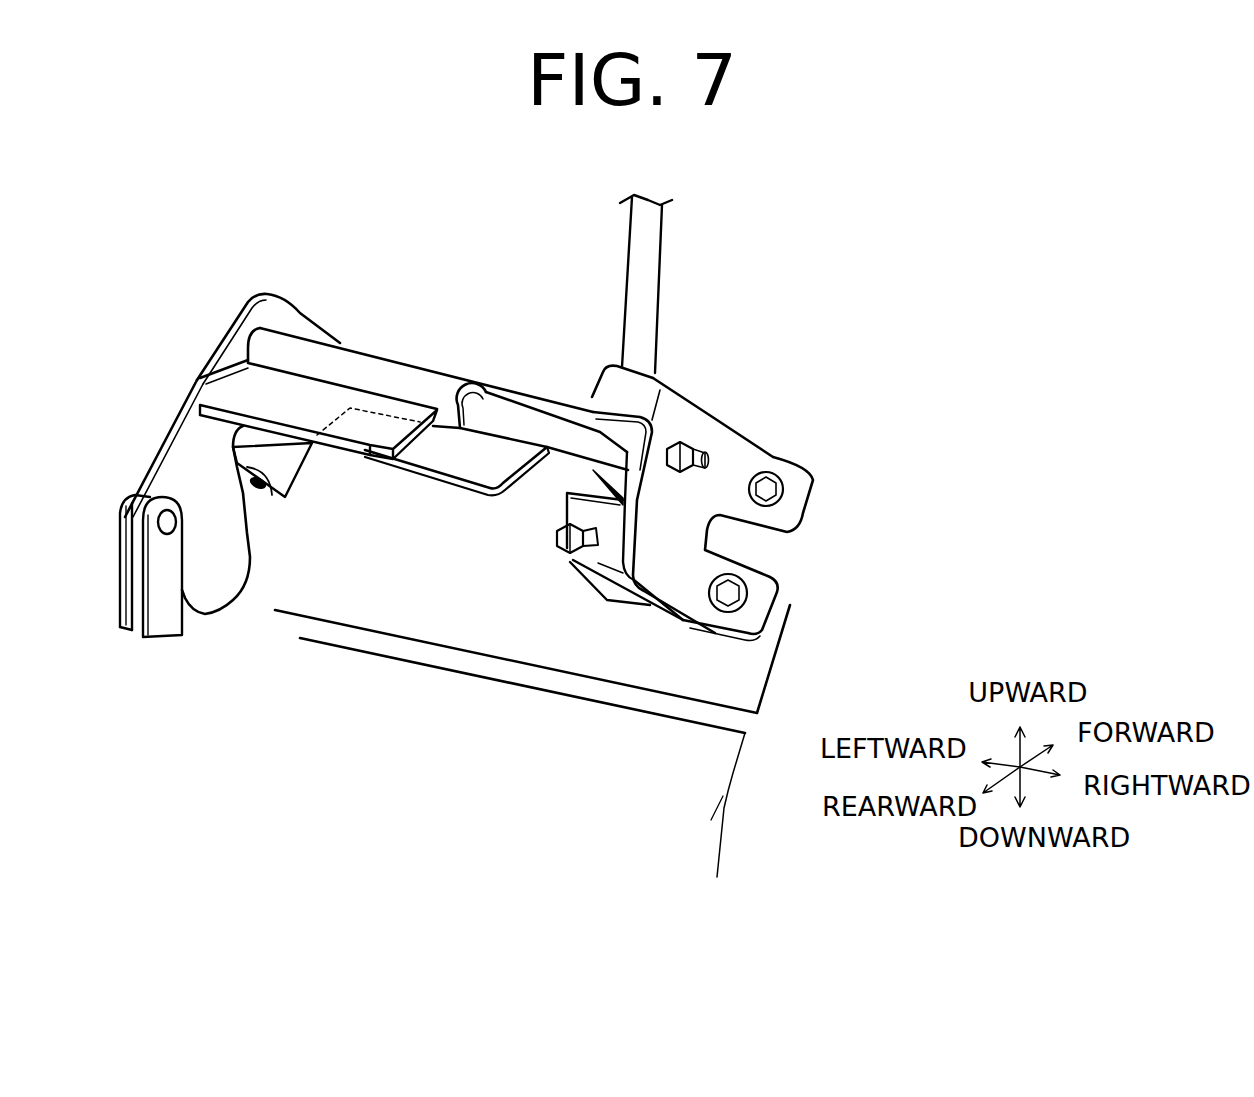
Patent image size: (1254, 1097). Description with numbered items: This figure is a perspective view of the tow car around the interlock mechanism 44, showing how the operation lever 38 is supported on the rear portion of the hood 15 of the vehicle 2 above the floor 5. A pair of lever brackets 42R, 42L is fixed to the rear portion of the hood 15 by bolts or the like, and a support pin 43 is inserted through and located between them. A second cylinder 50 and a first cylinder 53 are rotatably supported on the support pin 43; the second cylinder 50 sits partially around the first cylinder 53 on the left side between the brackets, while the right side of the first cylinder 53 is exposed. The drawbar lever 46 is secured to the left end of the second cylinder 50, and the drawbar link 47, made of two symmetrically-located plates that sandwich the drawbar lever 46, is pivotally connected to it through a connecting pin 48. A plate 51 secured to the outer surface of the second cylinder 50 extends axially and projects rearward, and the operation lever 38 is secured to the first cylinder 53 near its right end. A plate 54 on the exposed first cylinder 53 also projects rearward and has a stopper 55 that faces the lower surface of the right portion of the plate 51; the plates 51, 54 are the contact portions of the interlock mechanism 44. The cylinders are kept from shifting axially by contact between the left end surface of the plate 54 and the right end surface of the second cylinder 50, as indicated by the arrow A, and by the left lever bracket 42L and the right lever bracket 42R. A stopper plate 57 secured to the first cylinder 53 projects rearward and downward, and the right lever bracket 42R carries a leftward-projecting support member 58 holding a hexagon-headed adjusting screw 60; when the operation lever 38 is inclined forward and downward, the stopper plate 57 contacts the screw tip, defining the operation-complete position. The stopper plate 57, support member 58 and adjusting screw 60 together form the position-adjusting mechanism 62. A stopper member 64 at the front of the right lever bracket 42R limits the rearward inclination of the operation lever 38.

The vehicle 2 is at (744, 799).
The floor 5 is at (728, 820).
The hood 15 is at (777, 655).
The operation lever 38 is at (655, 242).
The left lever bracket 42L is at (263, 312).
The right lever bracket 42R is at (730, 455).
The support pin 43 is at (698, 437).
The interlock mechanism 44 is at (451, 290).
The drawbar lever 46 is at (185, 452).
The drawbar link 47 is at (122, 600).
The connecting pin 48 is at (165, 522).
The second cylinder 50 is at (398, 372).
The plate 51 is at (340, 397).
The first cylinder 53 is at (535, 413).
The plate 54 is at (498, 443).
The stopper 55 is at (353, 453).
The stopper plate 57 is at (613, 482).
The support member 58 is at (608, 547).
The adjusting screw 60 is at (567, 572).
The position-adjusting mechanism 62 is at (590, 550).
The stopper member 64 is at (613, 380).
The arrow A is at (472, 441).